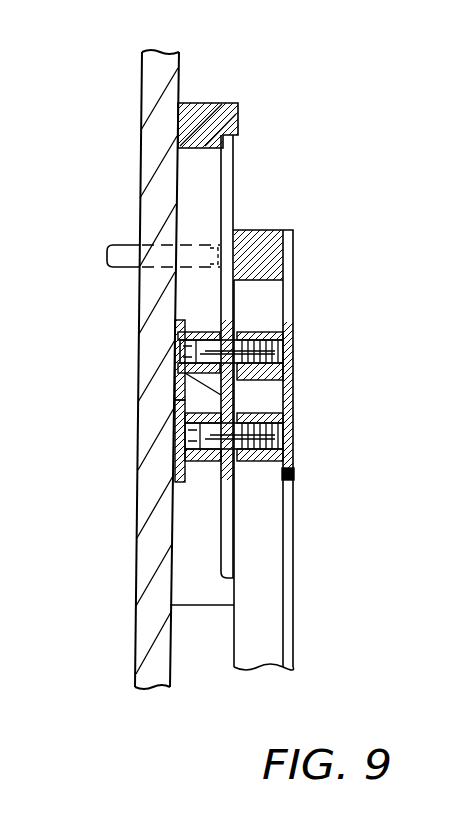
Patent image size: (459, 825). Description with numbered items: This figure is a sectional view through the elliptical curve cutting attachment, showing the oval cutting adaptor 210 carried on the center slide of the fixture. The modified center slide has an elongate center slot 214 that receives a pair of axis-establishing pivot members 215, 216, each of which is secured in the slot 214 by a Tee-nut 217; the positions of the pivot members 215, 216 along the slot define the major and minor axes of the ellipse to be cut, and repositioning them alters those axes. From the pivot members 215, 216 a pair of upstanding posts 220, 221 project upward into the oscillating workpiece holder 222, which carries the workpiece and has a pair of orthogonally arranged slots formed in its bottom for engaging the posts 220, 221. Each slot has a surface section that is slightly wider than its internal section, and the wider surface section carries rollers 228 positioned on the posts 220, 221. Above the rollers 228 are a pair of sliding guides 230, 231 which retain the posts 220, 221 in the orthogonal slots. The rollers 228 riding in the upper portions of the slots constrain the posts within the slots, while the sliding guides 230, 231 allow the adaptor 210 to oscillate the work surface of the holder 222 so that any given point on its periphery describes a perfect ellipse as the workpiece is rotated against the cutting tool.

The oval cutting adaptor 210 is at (252, 72).
The oscillating workpiece holder 222 is at (226, 104).
The upstanding post 221 is at (180, 362).
The sliding guide 230 is at (184, 388).
The upstanding post 220 is at (180, 438).
The sliding guide 231 is at (178, 465).
The axis-establishing pivot member 216 is at (288, 357).
The Tee-nut 217 is at (288, 383).
The axis-establishing pivot member 215 is at (288, 444).
The roller 228 is at (295, 475).
The elongate center slot 214 is at (262, 561).